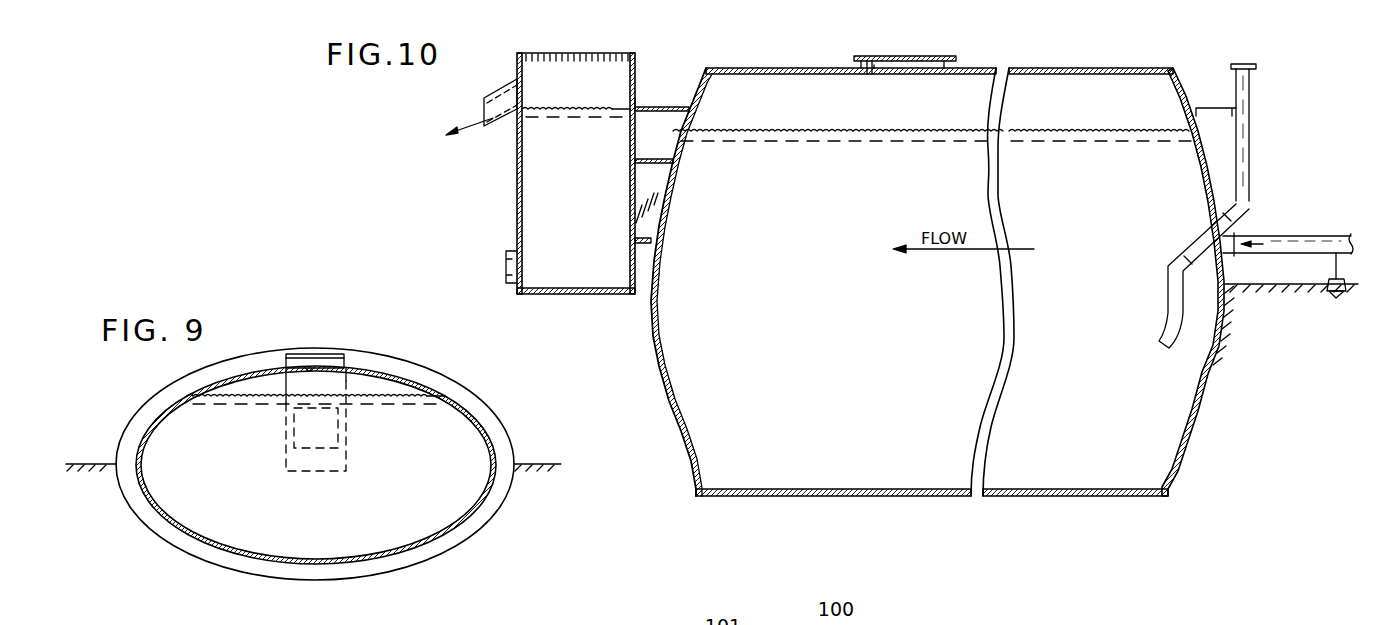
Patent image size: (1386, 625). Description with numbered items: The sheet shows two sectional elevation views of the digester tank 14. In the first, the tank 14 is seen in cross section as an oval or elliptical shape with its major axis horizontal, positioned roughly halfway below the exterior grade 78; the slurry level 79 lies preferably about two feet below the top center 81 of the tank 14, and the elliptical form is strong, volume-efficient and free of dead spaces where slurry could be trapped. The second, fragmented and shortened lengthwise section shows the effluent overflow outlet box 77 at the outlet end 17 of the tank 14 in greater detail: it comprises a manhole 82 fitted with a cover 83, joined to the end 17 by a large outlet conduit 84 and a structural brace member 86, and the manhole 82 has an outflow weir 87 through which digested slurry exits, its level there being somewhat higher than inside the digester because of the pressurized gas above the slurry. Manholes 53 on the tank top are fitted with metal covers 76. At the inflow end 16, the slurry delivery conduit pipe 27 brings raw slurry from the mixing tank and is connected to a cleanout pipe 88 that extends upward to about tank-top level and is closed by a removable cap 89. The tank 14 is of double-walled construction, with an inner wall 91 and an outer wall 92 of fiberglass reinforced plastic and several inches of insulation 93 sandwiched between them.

In FIG. 10, the digester tank 14 is at (915, 269).
In FIG. 9, the digester tank 14 is at (388, 356).
In FIG. 10, the inflow end 16 is at (1177, 85).
In FIG. 10, the outlet end 17 is at (746, 277).
In FIG. 10, the conduit pipe 27 is at (1304, 235).
In FIG. 10, the manholes 53 is at (873, 56).
In FIG. 10, the metal covers 76 is at (913, 55).
In FIG. 10, the effluent overflow outlet box 77 is at (567, 153).
In FIG. 9, the effluent overflow outlet box 77 is at (279, 382).
In FIG. 10, the exterior grade 78 is at (1244, 283).
In FIG. 9, the exterior grade 78 is at (102, 462).
In FIG. 10, the slurry level 79 is at (1055, 130).
In FIG. 9, the slurry level 79 is at (410, 394).
In FIG. 10, the top center 81 is at (851, 73).
In FIG. 9, the top center 81 is at (300, 352).
In FIG. 10, the manhole 82 is at (554, 153).
In FIG. 10, the cover 83 is at (582, 52).
In FIG. 10, the outlet conduit 84 is at (654, 158).
In FIG. 10, the structural brace member 86 is at (657, 106).
In FIG. 10, the outflow weir 87 is at (498, 90).
In FIG. 10, the cleanout pipe 88 is at (1231, 189).
In FIG. 10, the removable cap 89 is at (1244, 65).
In FIG. 10, the inner wall 91 is at (802, 74).
In FIG. 10, the outer wall 92 is at (802, 69).
In FIG. 10, the insulation 93 is at (682, 438).